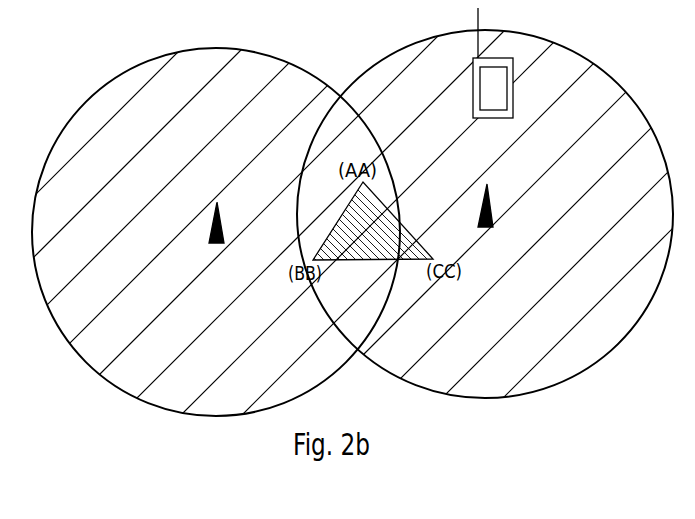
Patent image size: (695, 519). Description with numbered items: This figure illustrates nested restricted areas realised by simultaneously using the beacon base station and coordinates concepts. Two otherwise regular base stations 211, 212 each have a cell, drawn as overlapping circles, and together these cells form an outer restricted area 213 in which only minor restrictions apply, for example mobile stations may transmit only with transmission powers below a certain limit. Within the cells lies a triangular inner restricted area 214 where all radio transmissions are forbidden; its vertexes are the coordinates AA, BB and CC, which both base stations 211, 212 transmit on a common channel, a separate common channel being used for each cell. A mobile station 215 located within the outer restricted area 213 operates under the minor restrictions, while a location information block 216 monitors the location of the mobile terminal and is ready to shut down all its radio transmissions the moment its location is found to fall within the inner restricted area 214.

The base station 211 is at (224, 240).
The base station 212 is at (493, 223).
The outer restricted area 213 is at (445, 392).
The inner restricted area 214 is at (399, 262).
The mobile station 215 is at (473, 104).
The location information block 216 is at (513, 91).